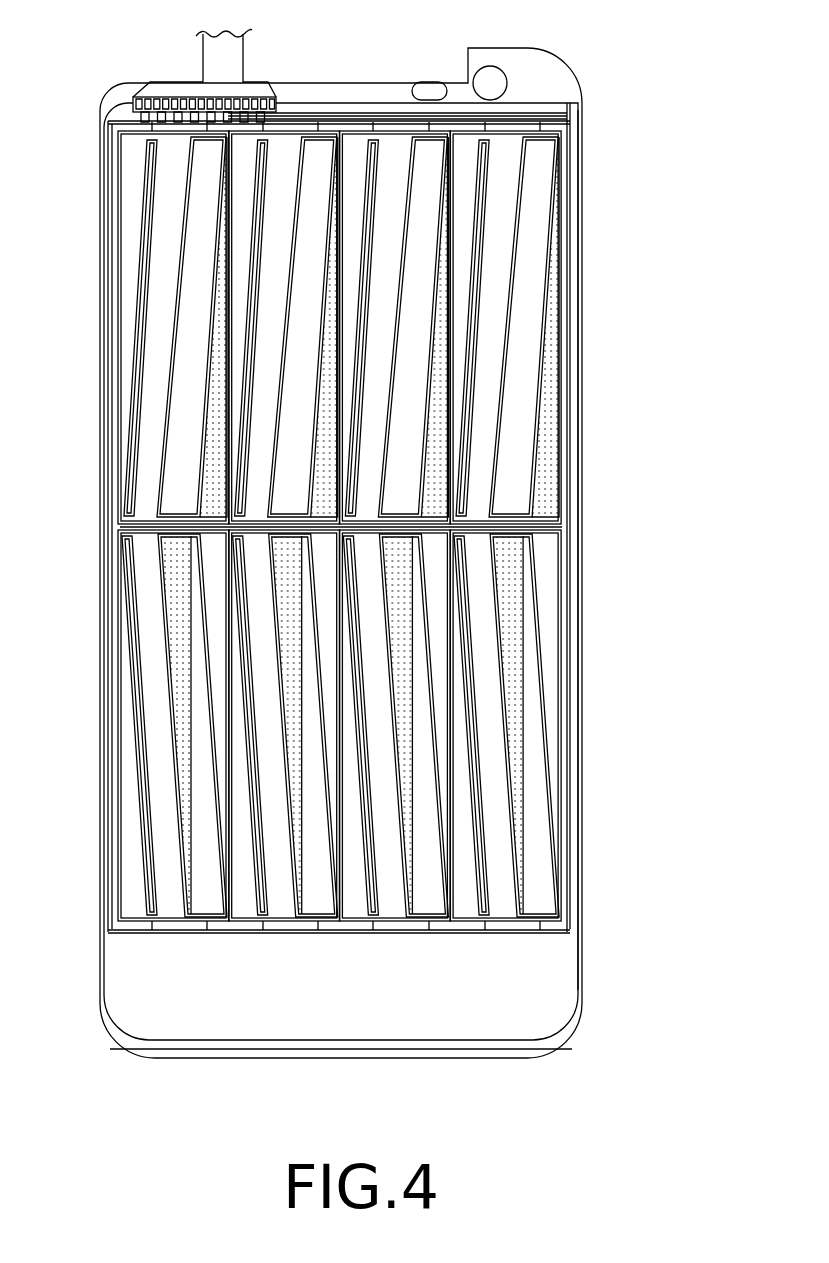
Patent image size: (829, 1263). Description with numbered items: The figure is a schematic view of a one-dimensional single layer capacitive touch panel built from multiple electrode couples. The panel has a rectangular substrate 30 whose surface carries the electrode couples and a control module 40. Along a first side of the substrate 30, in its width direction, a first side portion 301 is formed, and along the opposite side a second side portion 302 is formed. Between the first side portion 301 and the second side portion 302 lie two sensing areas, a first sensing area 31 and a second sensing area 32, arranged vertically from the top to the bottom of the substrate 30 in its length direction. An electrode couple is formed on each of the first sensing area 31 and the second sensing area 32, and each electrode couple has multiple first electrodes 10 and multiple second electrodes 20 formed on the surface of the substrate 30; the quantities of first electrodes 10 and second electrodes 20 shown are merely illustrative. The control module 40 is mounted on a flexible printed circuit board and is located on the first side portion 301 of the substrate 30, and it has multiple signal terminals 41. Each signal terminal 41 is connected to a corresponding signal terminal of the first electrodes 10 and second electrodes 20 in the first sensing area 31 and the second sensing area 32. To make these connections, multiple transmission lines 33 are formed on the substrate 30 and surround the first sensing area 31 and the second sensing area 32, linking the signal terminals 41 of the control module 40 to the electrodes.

The first electrode 10 is at (128, 249).
The second electrode 20 is at (145, 437).
The substrate 30 is at (580, 508).
The first sensing area 31 is at (580, 393).
The second sensing area 32 is at (580, 750).
The transmission line 33 is at (568, 262).
The control module 40 is at (173, 83).
The signal terminal 41 is at (133, 98).
The first side portion 301 is at (525, 97).
The second side portion 302 is at (452, 945).